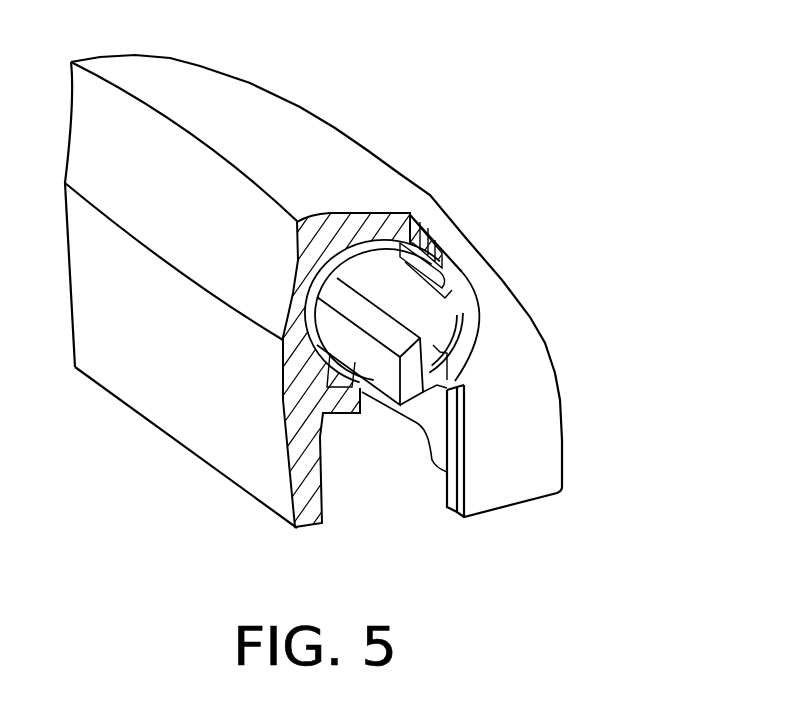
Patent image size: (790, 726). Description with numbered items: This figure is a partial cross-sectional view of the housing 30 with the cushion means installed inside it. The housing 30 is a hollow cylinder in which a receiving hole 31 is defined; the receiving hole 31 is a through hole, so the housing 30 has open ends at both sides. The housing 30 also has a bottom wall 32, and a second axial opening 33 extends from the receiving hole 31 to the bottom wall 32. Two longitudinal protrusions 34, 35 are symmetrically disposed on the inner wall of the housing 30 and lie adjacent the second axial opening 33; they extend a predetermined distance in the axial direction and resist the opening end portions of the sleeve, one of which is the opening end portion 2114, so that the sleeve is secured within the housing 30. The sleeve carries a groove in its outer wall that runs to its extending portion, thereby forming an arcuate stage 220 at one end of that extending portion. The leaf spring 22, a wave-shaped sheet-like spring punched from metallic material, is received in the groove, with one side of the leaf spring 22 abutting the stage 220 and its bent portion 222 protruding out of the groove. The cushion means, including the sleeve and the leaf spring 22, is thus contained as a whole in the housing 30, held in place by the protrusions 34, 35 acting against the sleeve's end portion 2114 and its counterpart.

The housing 30 is at (322, 155).
The bottom wall 32 is at (527, 500).
The longitudinal protrusion 34 is at (287, 427).
The second axial opening 33 is at (362, 405).
The receiving hole 31 is at (468, 338).
The longitudinal protrusion 35 is at (463, 383).
The opening end portion 2114 is at (473, 358).
The arcuate stage 220 is at (463, 303).
The leaf spring 22 is at (466, 272).
The bent portion 222 is at (436, 236).